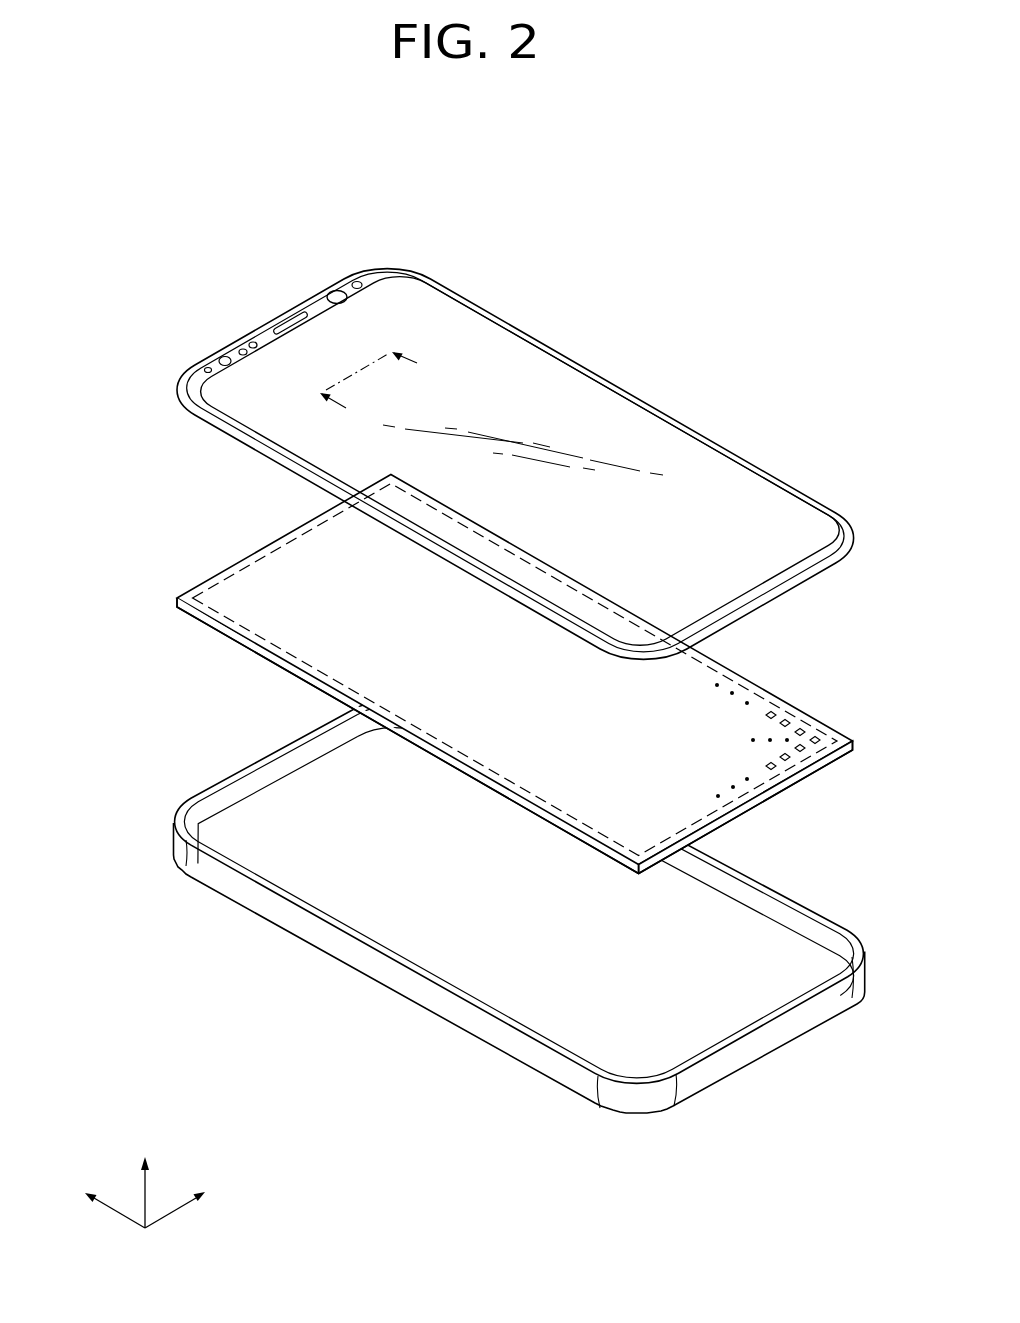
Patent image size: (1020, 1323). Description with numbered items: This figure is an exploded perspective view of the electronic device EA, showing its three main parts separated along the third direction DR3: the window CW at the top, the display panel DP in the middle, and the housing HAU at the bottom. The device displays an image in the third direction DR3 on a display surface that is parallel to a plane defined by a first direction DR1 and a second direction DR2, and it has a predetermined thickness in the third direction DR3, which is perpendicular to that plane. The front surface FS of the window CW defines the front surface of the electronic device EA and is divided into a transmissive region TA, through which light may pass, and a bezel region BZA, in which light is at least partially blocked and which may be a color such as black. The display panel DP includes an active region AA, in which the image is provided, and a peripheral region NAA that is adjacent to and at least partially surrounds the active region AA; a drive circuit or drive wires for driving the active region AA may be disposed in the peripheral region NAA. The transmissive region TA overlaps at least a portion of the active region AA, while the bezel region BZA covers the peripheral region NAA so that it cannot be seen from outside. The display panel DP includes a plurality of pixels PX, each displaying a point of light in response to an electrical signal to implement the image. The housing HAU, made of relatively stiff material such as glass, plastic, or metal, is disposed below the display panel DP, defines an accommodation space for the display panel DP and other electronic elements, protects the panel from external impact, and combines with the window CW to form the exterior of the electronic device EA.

The electronic device EA is at (690, 250).
The window CW is at (165, 394).
The front surface FS is at (362, 176).
The bezel region BZA is at (372, 278).
The transmissive region TA is at (338, 320).
The display panel DP is at (176, 603).
The active region AA is at (792, 733).
The peripheral region NAA is at (756, 692).
The pixel PX is at (781, 768).
The housing HAU is at (185, 847).
The first direction DR1 is at (189, 1195).
The second direction DR2 is at (101, 1195).
The third direction DR3 is at (145, 1179).